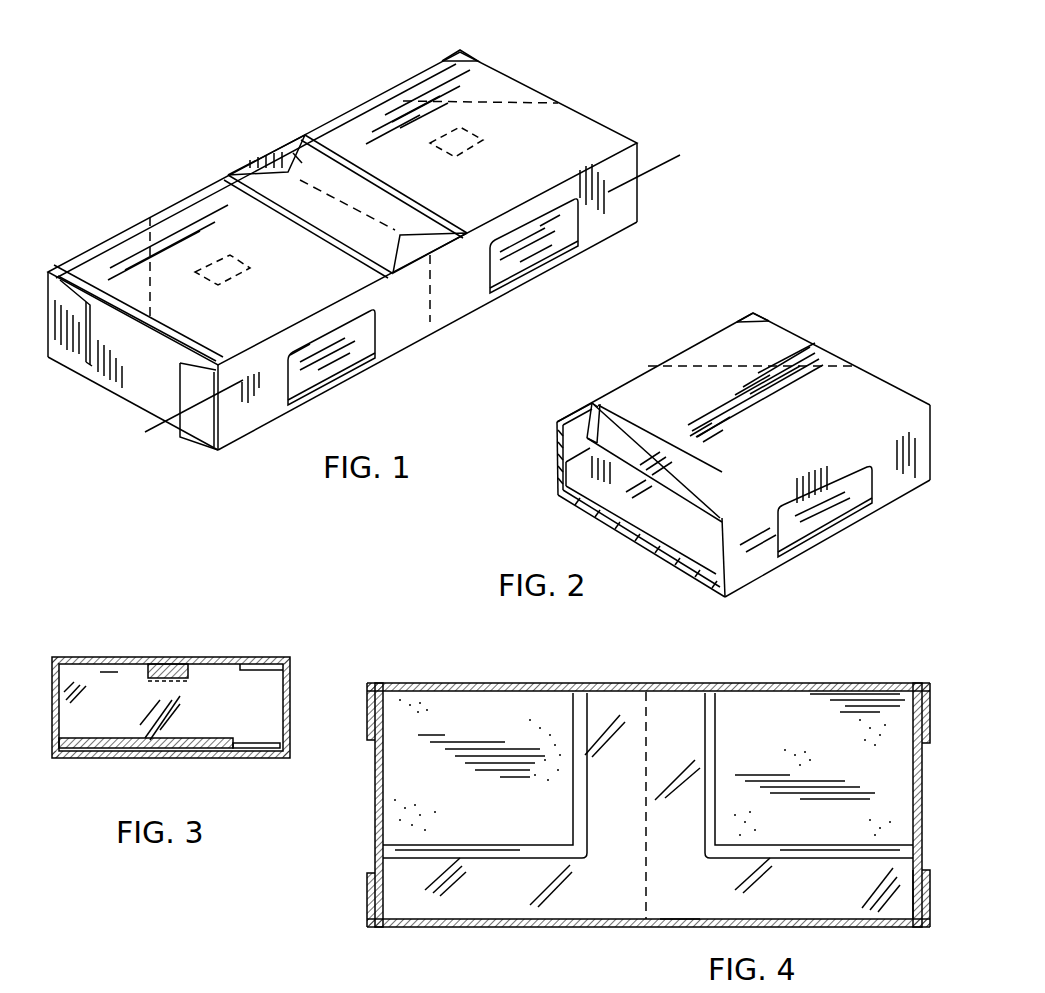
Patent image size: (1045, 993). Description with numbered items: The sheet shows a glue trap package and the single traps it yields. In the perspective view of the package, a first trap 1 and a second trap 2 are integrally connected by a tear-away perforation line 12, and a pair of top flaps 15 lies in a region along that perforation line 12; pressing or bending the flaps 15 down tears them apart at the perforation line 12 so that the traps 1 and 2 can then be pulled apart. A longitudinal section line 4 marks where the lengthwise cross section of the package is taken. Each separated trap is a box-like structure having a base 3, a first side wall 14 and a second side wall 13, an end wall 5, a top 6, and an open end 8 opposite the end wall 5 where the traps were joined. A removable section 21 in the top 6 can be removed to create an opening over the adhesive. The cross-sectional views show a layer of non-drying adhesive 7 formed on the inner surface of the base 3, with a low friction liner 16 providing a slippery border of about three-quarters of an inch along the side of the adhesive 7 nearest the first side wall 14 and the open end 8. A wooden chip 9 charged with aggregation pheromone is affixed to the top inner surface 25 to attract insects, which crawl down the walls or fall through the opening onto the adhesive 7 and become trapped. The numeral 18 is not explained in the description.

In FIG. 1, the first trap 1 is at (188, 184).
In FIG. 1, the second trap 2 is at (358, 92).
In FIG. 2, the base 3 is at (690, 575).
In FIG. 3, the base 3 is at (178, 760).
In FIG. 1, the section line 4- 4 is at (675, 143).
In FIG. 1, the end wall 5 is at (120, 382).
In FIG. 4, the end wall 5 is at (368, 820).
In FIG. 2, the top 6 is at (873, 395).
In FIG. 3, the top 6 is at (165, 665).
In FIG. 3, the layer of adhesive 7 is at (90, 740).
In FIG. 4, the layer of adhesive 7 is at (465, 735).
In FIG. 2, the open end 8 is at (623, 498).
In FIG. 3, the wooden chip 9 is at (175, 683).
In FIG. 1, the tear-away perforation line 12 is at (432, 322).
In FIG. 4, the tear-away perforation line 12 is at (648, 926).
In FIG. 4, the second side wall 13 is at (605, 685).
In FIG. 1, the first side wall 14 is at (258, 415).
In FIG. 2, the first side wall 14 is at (758, 562).
In FIG. 4, the first side wall 14 is at (585, 922).
In FIG. 1, the top flaps 15 is at (298, 162).
In FIG. 3, the low friction liner 16 is at (258, 740).
In FIG. 4, the low friction liner 16 is at (893, 905).
In FIG. 2, the window opening 18 is at (800, 520).
In FIG. 2, the removable section 21 is at (788, 346).
In FIG. 3, the top inner surface 25 is at (118, 671).